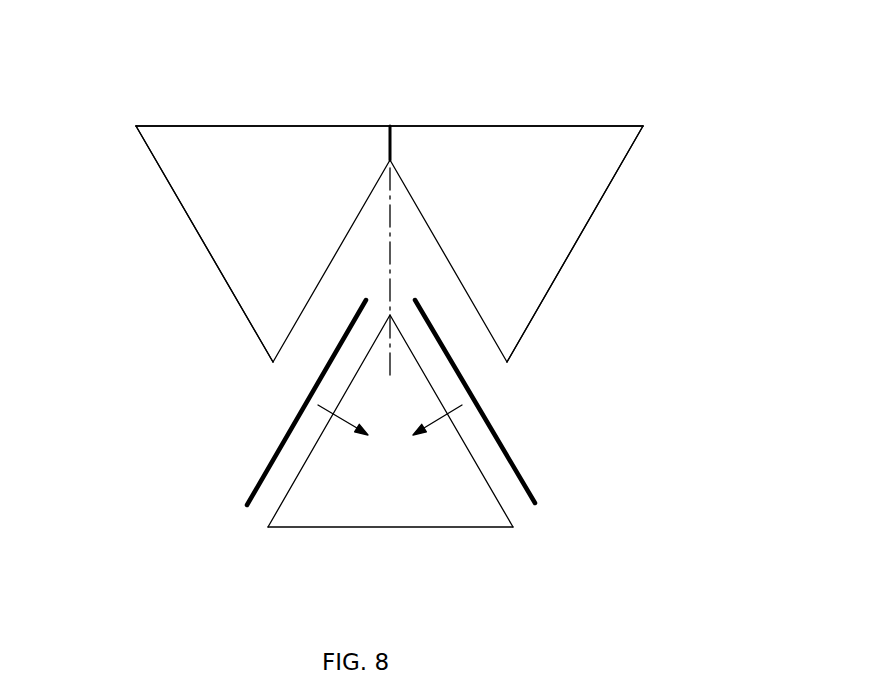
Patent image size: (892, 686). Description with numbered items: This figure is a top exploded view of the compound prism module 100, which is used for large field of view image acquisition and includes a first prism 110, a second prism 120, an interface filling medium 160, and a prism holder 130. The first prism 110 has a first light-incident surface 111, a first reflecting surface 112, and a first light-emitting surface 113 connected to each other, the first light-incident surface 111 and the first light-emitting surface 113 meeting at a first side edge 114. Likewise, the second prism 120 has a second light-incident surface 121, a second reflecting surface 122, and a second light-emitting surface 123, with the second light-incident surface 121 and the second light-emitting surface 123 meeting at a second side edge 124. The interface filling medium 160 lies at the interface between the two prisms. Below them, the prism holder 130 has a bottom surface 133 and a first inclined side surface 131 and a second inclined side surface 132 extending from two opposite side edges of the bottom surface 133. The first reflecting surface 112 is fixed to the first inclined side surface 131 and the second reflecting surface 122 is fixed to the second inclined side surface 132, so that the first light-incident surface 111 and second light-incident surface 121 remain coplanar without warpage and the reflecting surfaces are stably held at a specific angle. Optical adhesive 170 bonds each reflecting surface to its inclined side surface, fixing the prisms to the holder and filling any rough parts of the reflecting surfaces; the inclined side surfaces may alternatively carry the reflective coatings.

The compound prism module 100 is at (593, 98).
The first prism 110 is at (212, 167).
The first light-incident surface 111 is at (208, 118).
The first reflecting surface 112 is at (320, 300).
The first light-emitting surface 113 is at (205, 264).
The first side edge 114 is at (136, 126).
The second prism 120 is at (580, 154).
The second light-incident surface 121 is at (492, 118).
The second reflecting surface 122 is at (460, 300).
The second light-emitting surface 123 is at (580, 264).
The second side edge 124 is at (643, 126).
The prism holder 130 is at (472, 497).
The first inclined side surface 131 is at (260, 520).
The second inclined side surface 132 is at (522, 520).
The bottom surface 133 is at (356, 533).
The interface filling medium 160 is at (390, 126).
The optical adhesive 170 is at (270, 462).